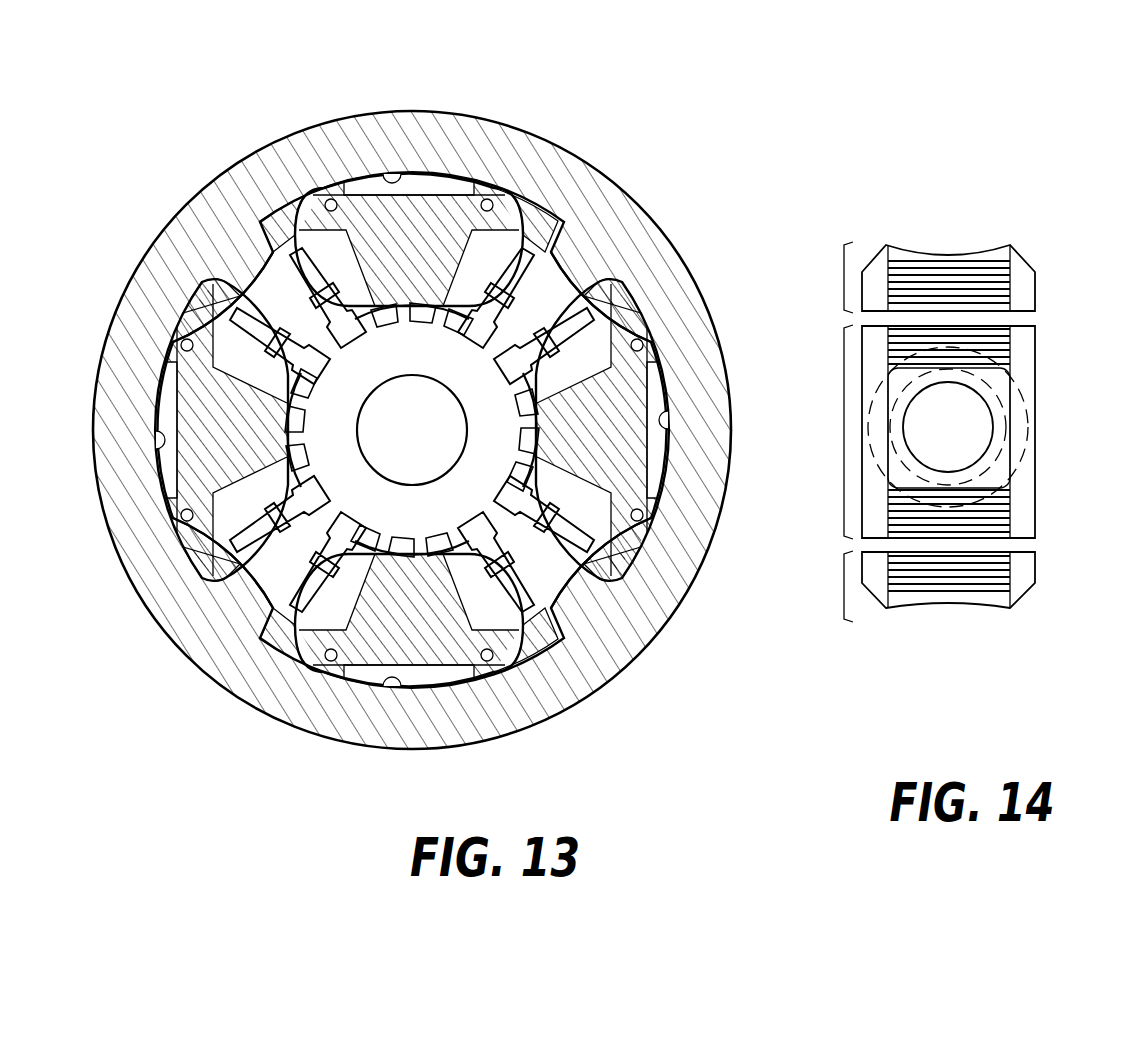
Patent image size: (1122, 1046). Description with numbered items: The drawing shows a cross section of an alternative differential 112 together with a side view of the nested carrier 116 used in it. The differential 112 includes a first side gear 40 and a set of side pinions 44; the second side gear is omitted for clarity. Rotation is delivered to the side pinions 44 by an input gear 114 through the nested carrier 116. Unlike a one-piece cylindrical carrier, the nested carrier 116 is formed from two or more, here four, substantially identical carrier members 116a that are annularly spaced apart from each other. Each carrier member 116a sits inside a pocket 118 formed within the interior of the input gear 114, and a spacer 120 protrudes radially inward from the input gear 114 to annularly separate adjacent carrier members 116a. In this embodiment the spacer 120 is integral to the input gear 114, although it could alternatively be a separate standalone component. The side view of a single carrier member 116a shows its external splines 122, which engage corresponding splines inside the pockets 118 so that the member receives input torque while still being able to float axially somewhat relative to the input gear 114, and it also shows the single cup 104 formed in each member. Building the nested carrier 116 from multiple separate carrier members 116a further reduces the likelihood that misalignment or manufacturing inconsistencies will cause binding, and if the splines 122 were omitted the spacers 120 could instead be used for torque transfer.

In FIG. 13, the first side gear 40 is at (330, 652).
In FIG. 13, the side pinions 44 is at (399, 264).
In FIG. 13, the cup 104 is at (490, 200).
In FIG. 14, the cup 104 is at (1030, 425).
In FIG. 13, the differential 112 is at (640, 126).
In FIG. 13, the input gear 114 is at (478, 719).
In FIG. 14, the nested carrier 116 is at (1055, 214).
In FIG. 13, the carrier members 116a is at (287, 190).
In FIG. 14, the carrier members 116a is at (844, 277).
In FIG. 13, the pocket 118 is at (400, 174).
In FIG. 13, the spacer 120 is at (233, 257).
In FIG. 14, the external splines 122 is at (1003, 278).